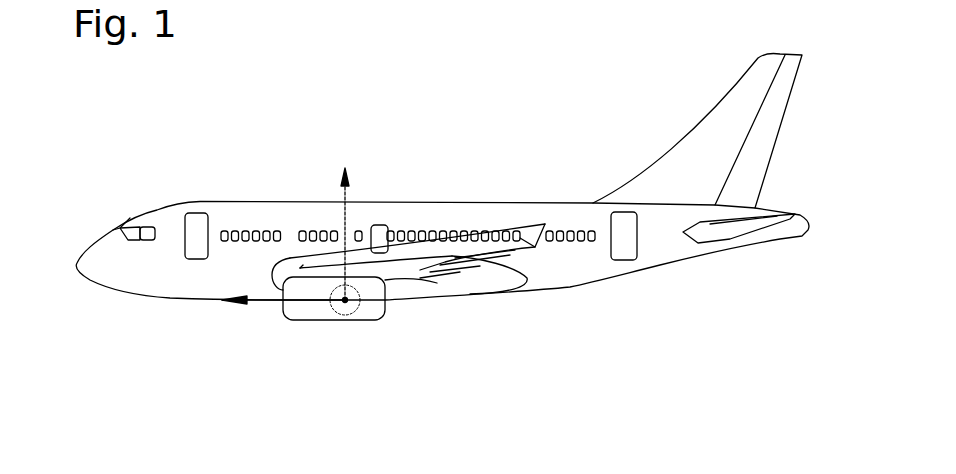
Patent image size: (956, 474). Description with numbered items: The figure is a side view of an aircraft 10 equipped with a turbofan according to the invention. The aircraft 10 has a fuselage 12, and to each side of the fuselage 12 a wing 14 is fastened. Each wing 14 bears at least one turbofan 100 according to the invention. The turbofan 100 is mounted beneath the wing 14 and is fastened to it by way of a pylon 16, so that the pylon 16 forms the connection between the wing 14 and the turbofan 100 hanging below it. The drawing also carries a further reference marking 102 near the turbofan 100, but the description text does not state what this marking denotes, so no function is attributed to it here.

The aircraft 10 is at (576, 133).
The fuselage 12 is at (593, 270).
The wing 14 is at (445, 255).
The pylon 16 is at (393, 277).
The turbofan 100 is at (250, 351).
The nacelle 102 is at (322, 300).